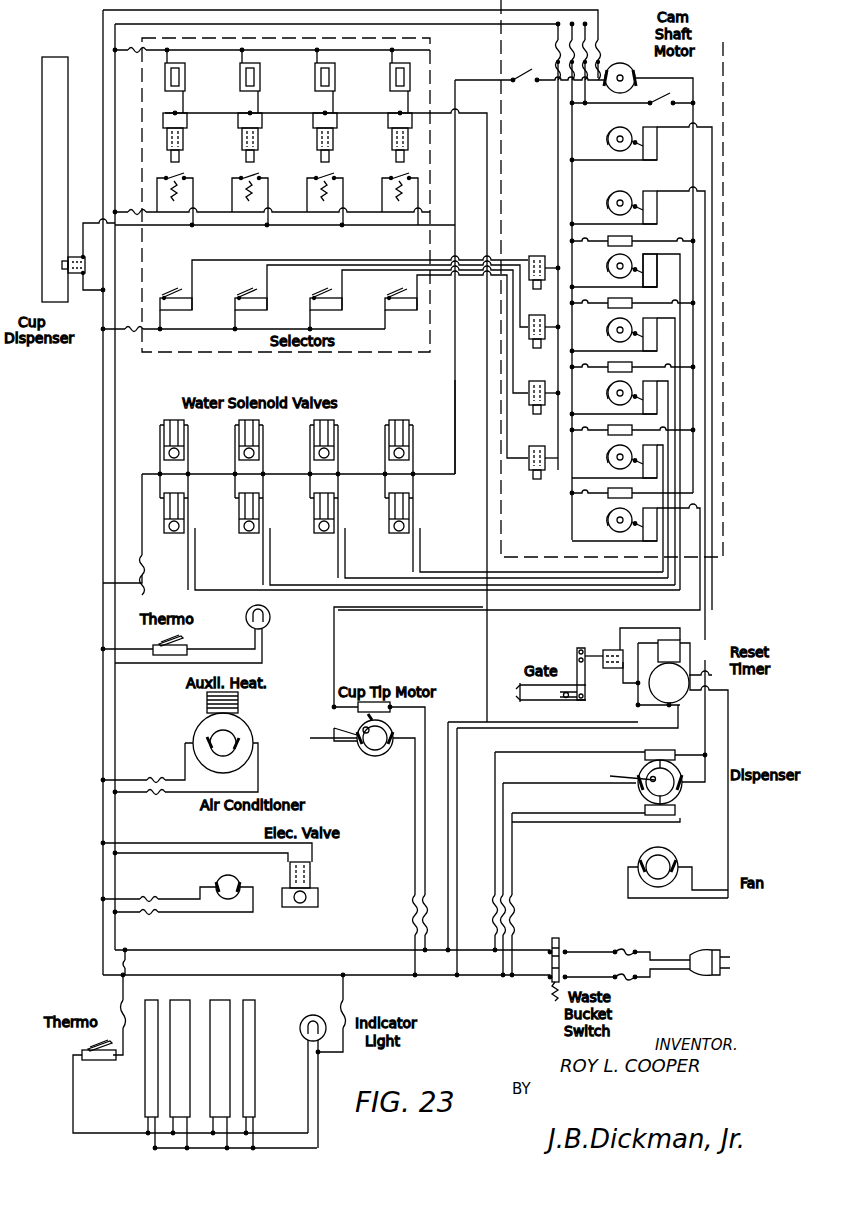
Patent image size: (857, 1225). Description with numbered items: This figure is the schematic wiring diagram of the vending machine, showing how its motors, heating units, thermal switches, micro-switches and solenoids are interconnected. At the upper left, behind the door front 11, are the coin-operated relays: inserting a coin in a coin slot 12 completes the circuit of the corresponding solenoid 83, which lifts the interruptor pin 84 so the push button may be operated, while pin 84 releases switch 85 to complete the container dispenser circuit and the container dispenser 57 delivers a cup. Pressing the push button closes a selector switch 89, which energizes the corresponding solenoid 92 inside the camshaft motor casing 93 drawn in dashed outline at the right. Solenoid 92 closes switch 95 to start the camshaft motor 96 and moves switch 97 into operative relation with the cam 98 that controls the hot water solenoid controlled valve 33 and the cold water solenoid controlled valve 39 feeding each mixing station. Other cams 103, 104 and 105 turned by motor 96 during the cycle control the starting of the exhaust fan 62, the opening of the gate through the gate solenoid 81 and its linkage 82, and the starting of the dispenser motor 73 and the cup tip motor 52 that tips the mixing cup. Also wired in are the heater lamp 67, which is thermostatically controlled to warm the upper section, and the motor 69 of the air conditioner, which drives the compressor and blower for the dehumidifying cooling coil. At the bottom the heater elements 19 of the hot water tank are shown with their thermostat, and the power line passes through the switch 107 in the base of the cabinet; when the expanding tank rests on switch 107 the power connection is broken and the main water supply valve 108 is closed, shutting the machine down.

The door front 11 is at (435, 76).
The coin slot 12 is at (393, 67).
The heater elements 19 is at (250, 1000).
The solenoid controlled valve 33 is at (393, 524).
The solenoid controlled valve 39 is at (404, 422).
The cup tip motor 52 is at (393, 755).
The container dispenser 57 is at (62, 160).
The exhaust fan 62 is at (676, 858).
The heater lamp 67 is at (271, 615).
The motor 69 is at (244, 733).
The dispenser motor 73 is at (680, 796).
The gate solenoid 81 is at (610, 650).
The linkage 82 is at (586, 684).
The solenoid 83 is at (388, 124).
The interruptor pin 84 is at (392, 152).
The switch 85 is at (382, 178).
The selector switch 89 is at (395, 311).
The solenoid 92 is at (540, 252).
The camshaft motor casing 93 is at (725, 58).
The switch 95 is at (613, 245).
The camshaft motor 96 is at (622, 63).
The switch 97 is at (660, 270).
The cam 98 is at (611, 273).
The cam 103 is at (617, 134).
The cam 104 is at (617, 198).
The cam 105 is at (618, 531).
The switch 107 is at (560, 945).
The main water supply valve 108 is at (312, 882).